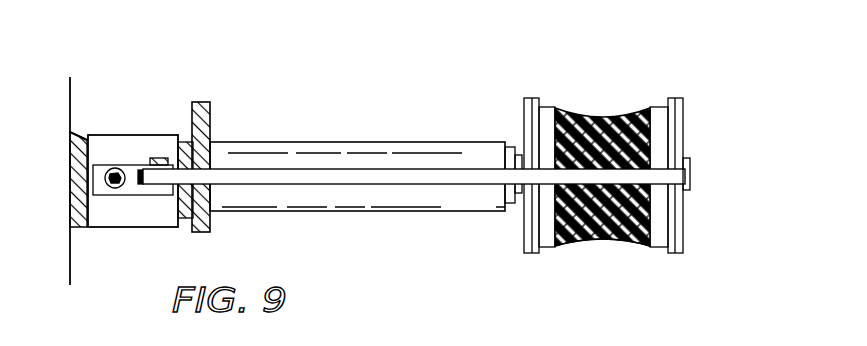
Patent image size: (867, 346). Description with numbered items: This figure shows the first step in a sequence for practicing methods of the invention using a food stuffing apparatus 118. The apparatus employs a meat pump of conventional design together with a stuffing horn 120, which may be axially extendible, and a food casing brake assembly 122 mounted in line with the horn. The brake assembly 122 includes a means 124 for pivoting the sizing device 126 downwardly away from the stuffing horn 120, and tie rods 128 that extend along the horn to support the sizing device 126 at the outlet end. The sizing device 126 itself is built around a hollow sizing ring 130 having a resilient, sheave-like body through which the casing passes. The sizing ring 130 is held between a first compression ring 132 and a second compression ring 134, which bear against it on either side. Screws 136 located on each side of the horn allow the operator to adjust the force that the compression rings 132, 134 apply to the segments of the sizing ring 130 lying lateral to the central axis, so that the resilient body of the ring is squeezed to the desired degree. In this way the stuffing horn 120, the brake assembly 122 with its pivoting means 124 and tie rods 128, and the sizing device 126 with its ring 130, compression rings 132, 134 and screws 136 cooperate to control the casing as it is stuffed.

The roller assembly 118 is at (214, 86).
The stuffing horn 120 is at (293, 142).
The food casing brake assembly 122 is at (599, 104).
The means for pivoting 124 is at (117, 169).
The sizing device 126 is at (675, 200).
The tie rods 128 is at (393, 177).
The hollow sizing ring 130 is at (633, 110).
The first compression ring 132 is at (690, 162).
The second compression ring 134 is at (523, 238).
The screws 136 is at (620, 238).